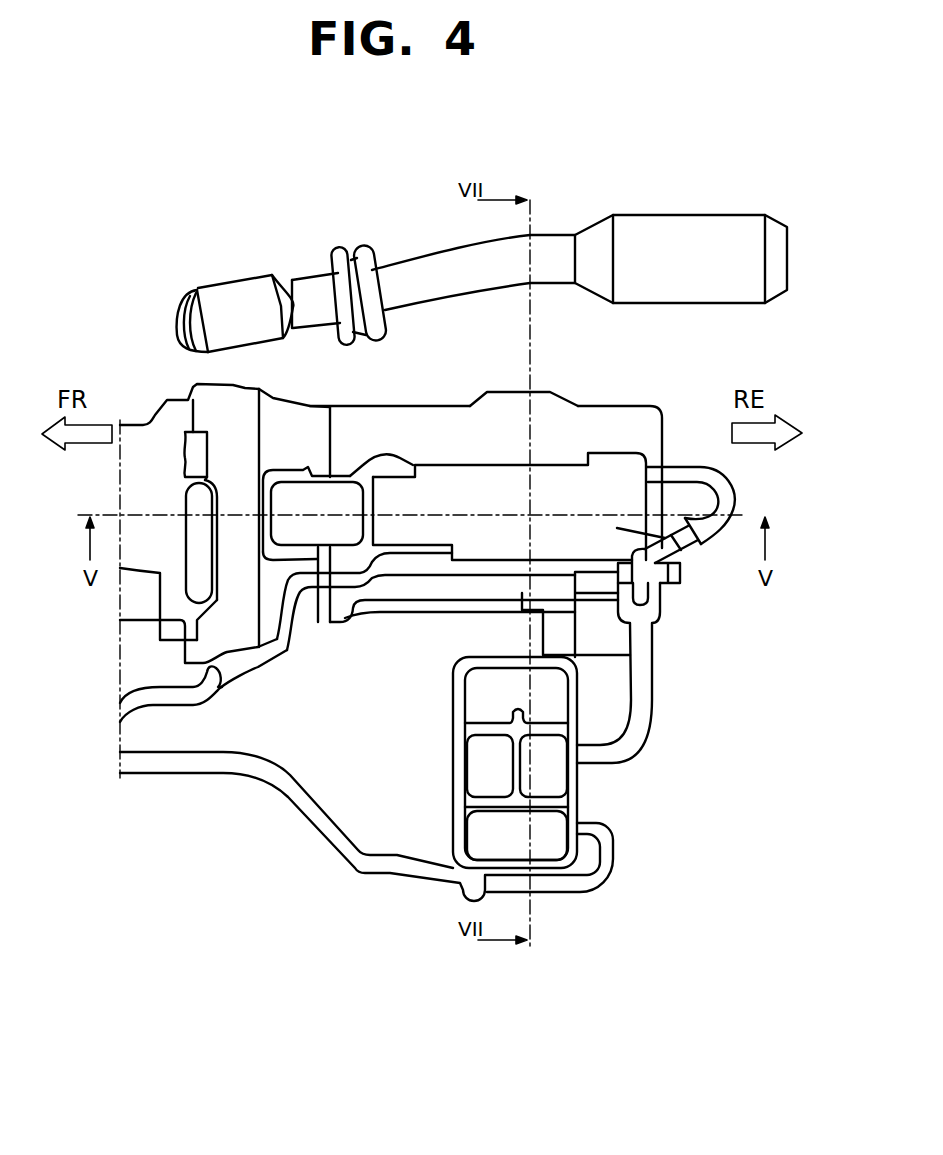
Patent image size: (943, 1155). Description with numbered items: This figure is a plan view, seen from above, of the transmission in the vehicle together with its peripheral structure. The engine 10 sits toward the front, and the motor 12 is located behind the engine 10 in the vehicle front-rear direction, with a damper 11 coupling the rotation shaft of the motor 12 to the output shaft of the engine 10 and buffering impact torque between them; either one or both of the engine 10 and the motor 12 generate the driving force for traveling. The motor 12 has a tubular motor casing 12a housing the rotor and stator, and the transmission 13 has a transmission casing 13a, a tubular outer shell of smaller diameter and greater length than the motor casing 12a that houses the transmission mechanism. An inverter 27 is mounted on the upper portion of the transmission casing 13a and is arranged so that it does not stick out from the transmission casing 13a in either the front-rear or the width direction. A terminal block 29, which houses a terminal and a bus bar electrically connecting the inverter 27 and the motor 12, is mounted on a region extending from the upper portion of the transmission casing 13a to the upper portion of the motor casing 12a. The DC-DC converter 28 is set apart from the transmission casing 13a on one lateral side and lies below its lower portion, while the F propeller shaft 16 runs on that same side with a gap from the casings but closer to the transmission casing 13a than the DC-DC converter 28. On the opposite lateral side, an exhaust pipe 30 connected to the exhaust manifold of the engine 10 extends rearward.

The engine 10 is at (152, 468).
The damper 11 is at (228, 460).
The motor 12 is at (303, 447).
The motor casing 12a is at (314, 446).
The transmission 13 is at (547, 417).
The transmission casing 13a is at (439, 444).
The F propeller shaft 16 is at (418, 610).
The inverter 27 is at (672, 545).
The DC-DC converter 28 is at (547, 777).
The terminal block 29 is at (293, 527).
The exhaust pipe 30 is at (692, 215).